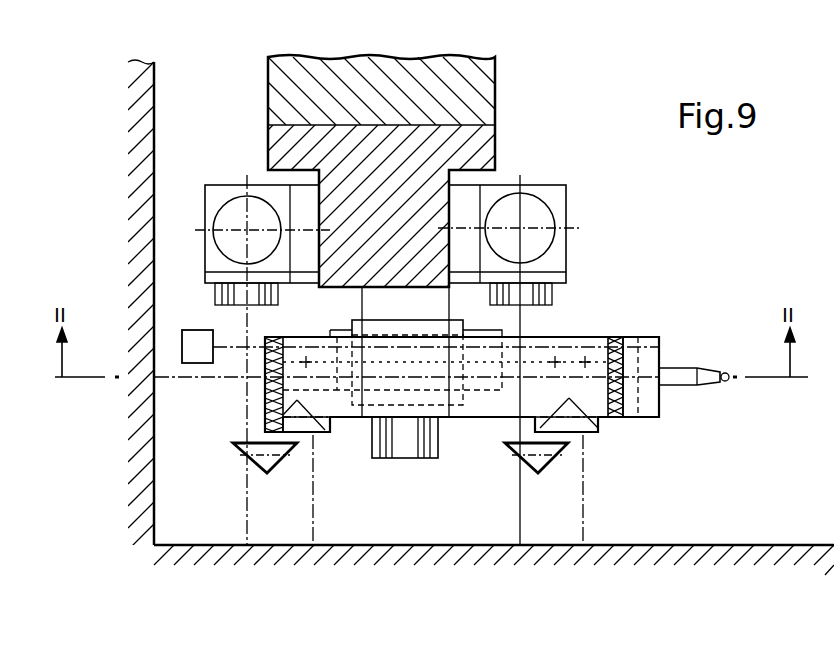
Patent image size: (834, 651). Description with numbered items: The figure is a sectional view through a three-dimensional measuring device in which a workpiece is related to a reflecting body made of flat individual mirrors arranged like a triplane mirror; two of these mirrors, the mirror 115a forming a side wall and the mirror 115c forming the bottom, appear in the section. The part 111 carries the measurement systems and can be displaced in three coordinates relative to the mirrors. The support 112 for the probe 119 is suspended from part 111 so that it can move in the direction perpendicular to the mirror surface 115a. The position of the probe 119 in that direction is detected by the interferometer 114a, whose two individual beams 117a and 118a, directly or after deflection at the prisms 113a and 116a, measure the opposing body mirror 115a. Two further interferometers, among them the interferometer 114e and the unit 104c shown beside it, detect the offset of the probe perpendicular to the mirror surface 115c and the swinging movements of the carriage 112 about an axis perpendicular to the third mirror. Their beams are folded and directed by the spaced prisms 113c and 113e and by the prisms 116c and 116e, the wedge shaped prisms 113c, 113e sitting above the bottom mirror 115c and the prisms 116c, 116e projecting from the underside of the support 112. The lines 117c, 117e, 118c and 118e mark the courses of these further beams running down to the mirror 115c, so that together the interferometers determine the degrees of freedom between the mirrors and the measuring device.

The part carrying the measurement systems 111 is at (482, 97).
The guide roller 104c is at (531, 212).
The interferometer 114e is at (232, 210).
The individual mirror 115a is at (152, 190).
The individual mirror 115c is at (742, 545).
The prism 113a is at (182, 350).
The support 112 is at (575, 340).
The prism 116a is at (628, 362).
The prism 116c is at (590, 432).
The prism 116e is at (320, 434).
The interferometer 114a is at (405, 458).
The prism 113e is at (240, 445).
The prism 113c is at (538, 473).
The individual beam 118a is at (204, 400).
The axis line 118e is at (247, 528).
The axis line 118c is at (519, 502).
The individual beam 117a is at (205, 395).
The axis line 117e is at (313, 515).
The axis line 117c is at (583, 522).
The probe 119 is at (680, 378).